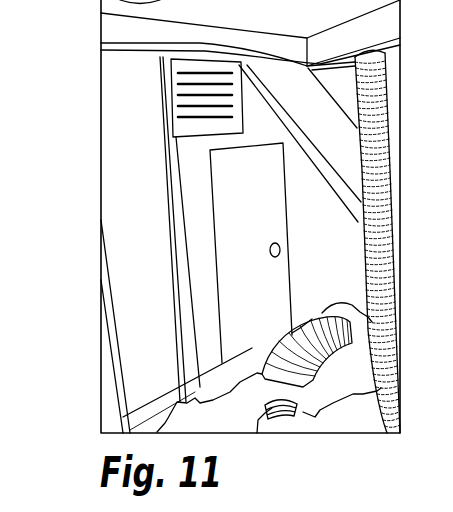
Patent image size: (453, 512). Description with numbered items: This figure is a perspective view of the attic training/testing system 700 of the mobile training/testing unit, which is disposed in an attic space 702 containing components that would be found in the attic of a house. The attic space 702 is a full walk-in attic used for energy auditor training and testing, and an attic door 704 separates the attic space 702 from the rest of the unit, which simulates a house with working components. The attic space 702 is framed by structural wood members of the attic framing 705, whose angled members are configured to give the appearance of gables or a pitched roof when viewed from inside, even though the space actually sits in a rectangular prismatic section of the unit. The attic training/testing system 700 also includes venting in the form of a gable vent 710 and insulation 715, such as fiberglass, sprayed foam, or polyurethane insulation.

The attic training/testing system 700 is at (88, 97).
The attic space 702 is at (124, 205).
The attic door 704 is at (226, 190).
The attic framing 705 is at (283, 78).
The gable vent 710 is at (178, 114).
The insulation 715 is at (298, 393).